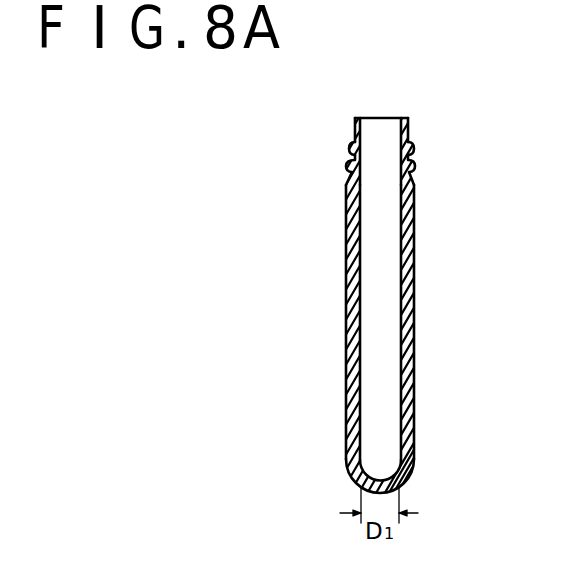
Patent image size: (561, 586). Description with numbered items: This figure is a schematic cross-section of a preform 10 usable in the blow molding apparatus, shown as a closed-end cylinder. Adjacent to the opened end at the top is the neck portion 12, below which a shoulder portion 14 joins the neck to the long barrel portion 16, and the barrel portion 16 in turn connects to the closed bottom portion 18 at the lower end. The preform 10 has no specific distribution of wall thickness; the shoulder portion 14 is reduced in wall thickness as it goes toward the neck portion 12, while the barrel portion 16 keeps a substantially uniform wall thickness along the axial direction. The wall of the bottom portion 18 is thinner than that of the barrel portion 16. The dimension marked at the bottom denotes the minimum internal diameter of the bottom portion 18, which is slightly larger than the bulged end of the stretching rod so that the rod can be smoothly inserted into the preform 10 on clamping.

The preform 10 is at (397, 97).
The neck portion 12 is at (414, 140).
The shoulder portion 14 is at (418, 177).
The barrel portion 16 is at (410, 235).
The bottom portion 18 is at (379, 492).